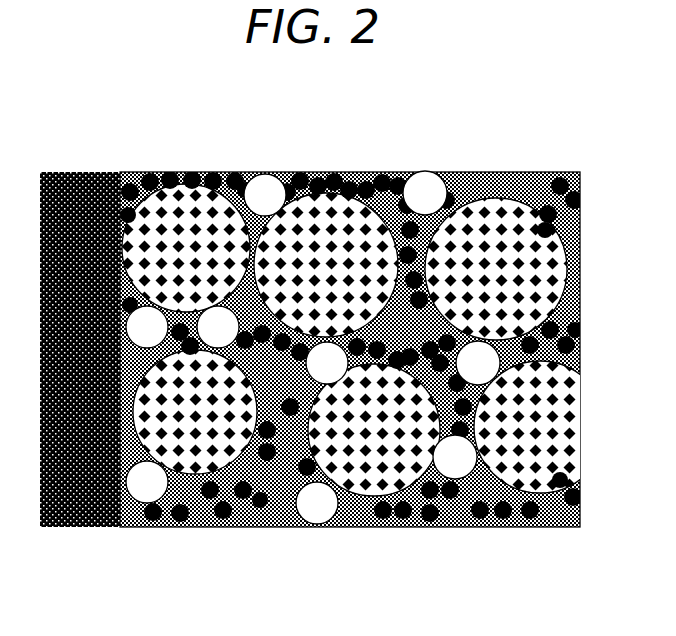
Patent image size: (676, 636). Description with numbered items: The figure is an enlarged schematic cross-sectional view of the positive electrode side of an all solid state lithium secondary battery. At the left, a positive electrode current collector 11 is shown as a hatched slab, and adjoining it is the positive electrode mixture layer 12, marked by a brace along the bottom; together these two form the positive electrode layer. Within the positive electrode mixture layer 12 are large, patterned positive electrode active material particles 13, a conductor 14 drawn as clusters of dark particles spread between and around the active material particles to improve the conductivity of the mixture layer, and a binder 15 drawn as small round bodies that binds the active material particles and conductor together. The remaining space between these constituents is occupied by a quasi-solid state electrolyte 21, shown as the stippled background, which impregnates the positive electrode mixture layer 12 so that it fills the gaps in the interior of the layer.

The positive electrode current collector 11 is at (35, 152).
The positive electrode mixture layer 12 is at (125, 535).
The positive electrode active material particles 13 is at (187, 202).
The conductor 14 is at (402, 185).
The binder 15 is at (265, 192).
The quasi-solid state electrolyte 21 is at (511, 192).